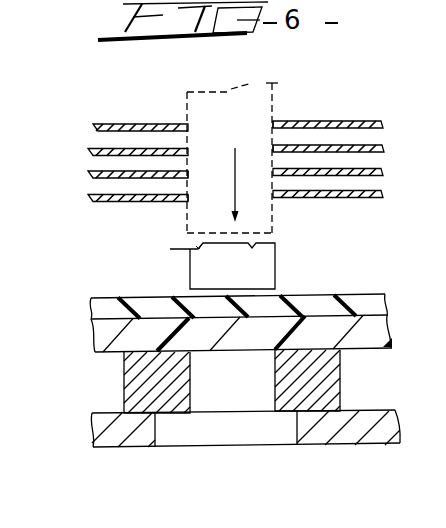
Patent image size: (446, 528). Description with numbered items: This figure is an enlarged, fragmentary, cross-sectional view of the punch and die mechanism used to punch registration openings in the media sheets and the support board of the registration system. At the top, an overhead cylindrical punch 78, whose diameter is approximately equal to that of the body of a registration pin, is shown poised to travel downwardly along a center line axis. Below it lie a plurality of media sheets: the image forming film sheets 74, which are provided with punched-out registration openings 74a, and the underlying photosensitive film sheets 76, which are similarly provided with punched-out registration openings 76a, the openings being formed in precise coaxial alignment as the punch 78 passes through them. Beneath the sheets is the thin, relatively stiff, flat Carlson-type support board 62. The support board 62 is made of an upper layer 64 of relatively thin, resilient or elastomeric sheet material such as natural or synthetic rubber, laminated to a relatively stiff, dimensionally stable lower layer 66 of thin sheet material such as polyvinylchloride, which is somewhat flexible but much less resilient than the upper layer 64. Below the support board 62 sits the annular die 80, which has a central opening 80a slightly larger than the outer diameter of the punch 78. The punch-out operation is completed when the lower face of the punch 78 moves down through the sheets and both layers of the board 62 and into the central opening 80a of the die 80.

The support board 62 is at (87, 321).
The upper layer 64 is at (411, 271).
The lower layer 66 is at (400, 333).
The film sheets 74 is at (346, 147).
The registration openings 74a is at (273, 152).
The photosensitive film sheets 76 is at (347, 190).
The registration openings 76a is at (188, 174).
The cylindrical punch 78 is at (237, 129).
The annular die 80 is at (148, 388).
The central opening 80a is at (190, 388).